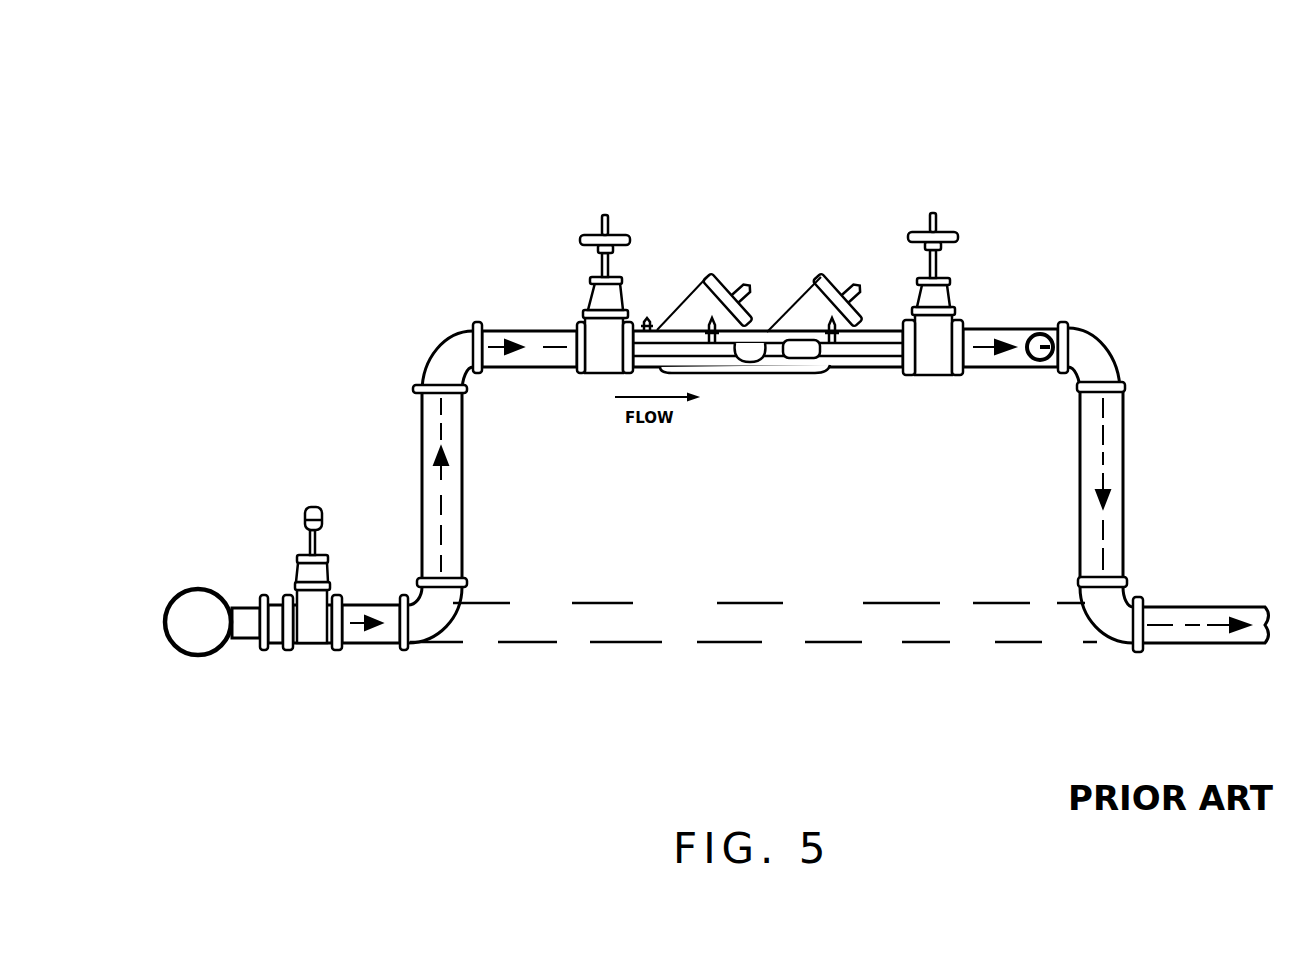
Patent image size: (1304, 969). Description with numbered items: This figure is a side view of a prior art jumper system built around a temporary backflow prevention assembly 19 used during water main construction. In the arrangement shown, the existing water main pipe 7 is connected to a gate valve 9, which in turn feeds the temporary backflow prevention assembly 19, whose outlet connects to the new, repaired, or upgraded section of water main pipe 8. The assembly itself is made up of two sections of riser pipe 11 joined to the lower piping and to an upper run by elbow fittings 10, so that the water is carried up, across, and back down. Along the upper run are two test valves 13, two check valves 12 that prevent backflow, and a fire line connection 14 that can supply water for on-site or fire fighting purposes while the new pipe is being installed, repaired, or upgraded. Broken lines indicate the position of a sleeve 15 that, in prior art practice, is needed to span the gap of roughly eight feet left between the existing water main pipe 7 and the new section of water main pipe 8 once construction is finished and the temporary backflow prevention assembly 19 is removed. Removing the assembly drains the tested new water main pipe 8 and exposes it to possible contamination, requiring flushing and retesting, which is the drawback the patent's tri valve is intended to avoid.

The existing water main pipe 7 is at (205, 667).
The new/repaired/upgraded water main pipe 8 is at (1197, 635).
The gate valve 9 is at (315, 500).
The elbow fittings 10 is at (418, 349).
The riser pipe 11 is at (462, 428).
The check valves 12 is at (707, 275).
The test valves 13 is at (598, 238).
The fire line connection 14 is at (1041, 332).
The sleeve 15 is at (827, 632).
The temporary backflow prevention assembly 19 is at (1035, 67).